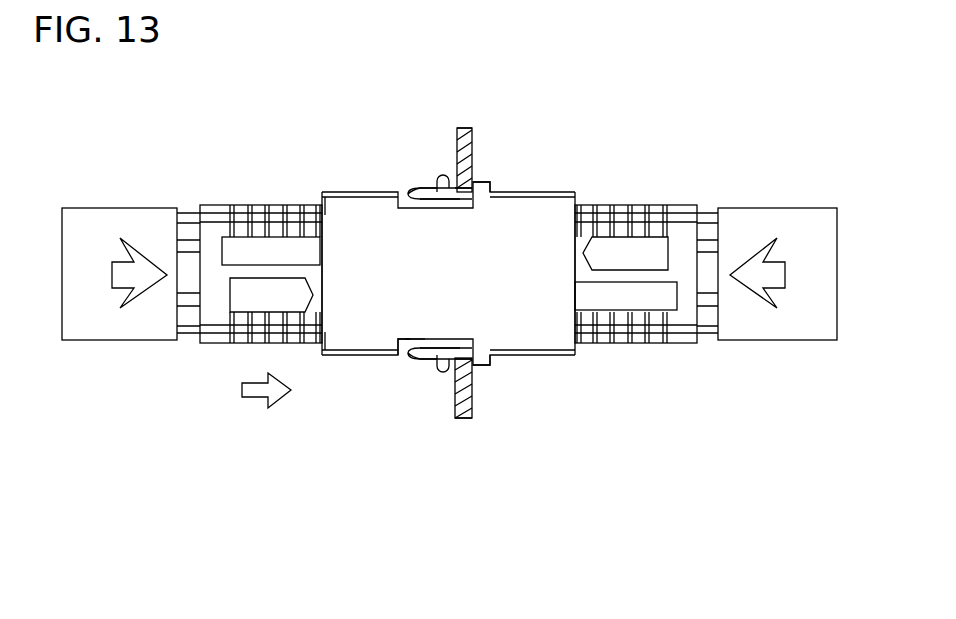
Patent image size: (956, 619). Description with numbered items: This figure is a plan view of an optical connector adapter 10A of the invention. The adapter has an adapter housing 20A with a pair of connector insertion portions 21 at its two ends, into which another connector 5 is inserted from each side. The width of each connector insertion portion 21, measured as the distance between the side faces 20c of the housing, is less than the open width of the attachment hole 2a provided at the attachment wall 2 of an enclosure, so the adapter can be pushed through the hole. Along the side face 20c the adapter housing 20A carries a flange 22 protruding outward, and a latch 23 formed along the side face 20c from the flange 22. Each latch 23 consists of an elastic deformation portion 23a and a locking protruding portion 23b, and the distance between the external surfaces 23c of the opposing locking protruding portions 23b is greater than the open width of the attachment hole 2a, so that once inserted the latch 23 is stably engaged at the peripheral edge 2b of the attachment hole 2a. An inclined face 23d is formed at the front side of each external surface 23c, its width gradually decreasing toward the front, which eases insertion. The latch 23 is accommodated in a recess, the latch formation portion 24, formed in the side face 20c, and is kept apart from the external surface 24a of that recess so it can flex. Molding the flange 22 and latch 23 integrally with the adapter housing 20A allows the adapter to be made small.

The attachment wall 2 is at (474, 310).
The attachment hole 2a is at (448, 360).
The peripheral edge 2b is at (462, 392).
The another connector 5 is at (238, 203).
The optical connector adapter 10A is at (568, 185).
The adapter housing 20A is at (550, 209).
The side face 20c is at (336, 193).
The connector insertion portion 21 is at (355, 215).
The flange 22 is at (481, 183).
The latch 23 is at (528, 97).
The elastic deformation portion 23a is at (457, 199).
The locking protruding portion 23b is at (425, 203).
The external surface 23c is at (392, 216).
The inclined face 23d is at (412, 196).
The latch formation portion 24 is at (400, 352).
The external surface 24a is at (412, 355).